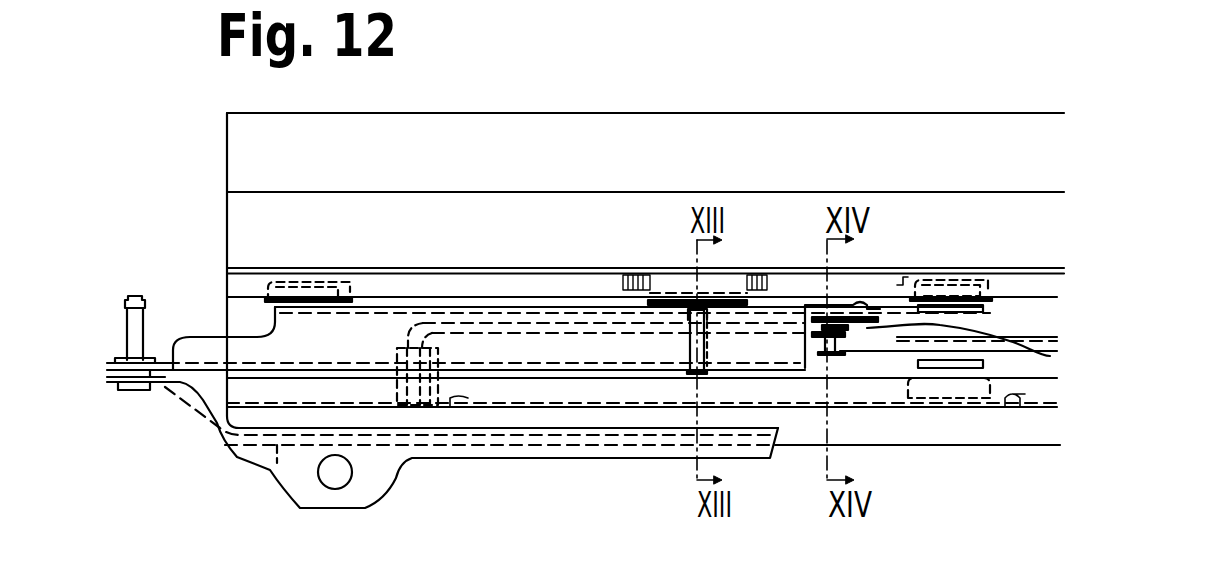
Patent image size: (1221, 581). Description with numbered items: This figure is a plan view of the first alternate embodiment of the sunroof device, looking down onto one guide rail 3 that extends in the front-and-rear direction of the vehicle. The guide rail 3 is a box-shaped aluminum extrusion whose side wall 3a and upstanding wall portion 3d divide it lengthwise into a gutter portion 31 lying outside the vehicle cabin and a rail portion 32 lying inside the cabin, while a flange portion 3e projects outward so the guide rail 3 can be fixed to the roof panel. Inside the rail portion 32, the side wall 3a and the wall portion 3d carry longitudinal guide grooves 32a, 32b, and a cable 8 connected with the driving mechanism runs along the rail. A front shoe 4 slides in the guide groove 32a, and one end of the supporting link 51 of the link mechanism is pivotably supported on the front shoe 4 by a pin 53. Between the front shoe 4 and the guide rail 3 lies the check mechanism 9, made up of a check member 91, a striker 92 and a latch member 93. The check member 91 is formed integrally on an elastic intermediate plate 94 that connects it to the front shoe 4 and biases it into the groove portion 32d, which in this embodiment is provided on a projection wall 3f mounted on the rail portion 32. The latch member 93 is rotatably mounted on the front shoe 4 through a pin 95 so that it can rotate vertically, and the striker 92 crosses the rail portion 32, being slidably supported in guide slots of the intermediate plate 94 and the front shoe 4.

The guide rail 3 is at (636, 100).
The side wall 3a is at (683, 390).
The wall portion 3d is at (462, 287).
The flange portion 3e is at (800, 137).
The projection wall 3f is at (888, 347).
The front shoe 4 is at (262, 347).
The cable 8 is at (621, 275).
The check mechanism 9 is at (799, 293).
The gutter portion 31 is at (993, 205).
The rail portion 32 is at (1026, 309).
The guide groove 32a is at (1015, 400).
The guide groove 32b is at (905, 274).
The groove portion 32d is at (808, 355).
The supporting link 51 is at (473, 452).
The pin 53 is at (131, 392).
The check member 91 is at (838, 348).
The striker 92 is at (688, 345).
The latch member 93 is at (850, 315).
The intermediate plate 94 is at (537, 328).
The pin 95 is at (1050, 356).